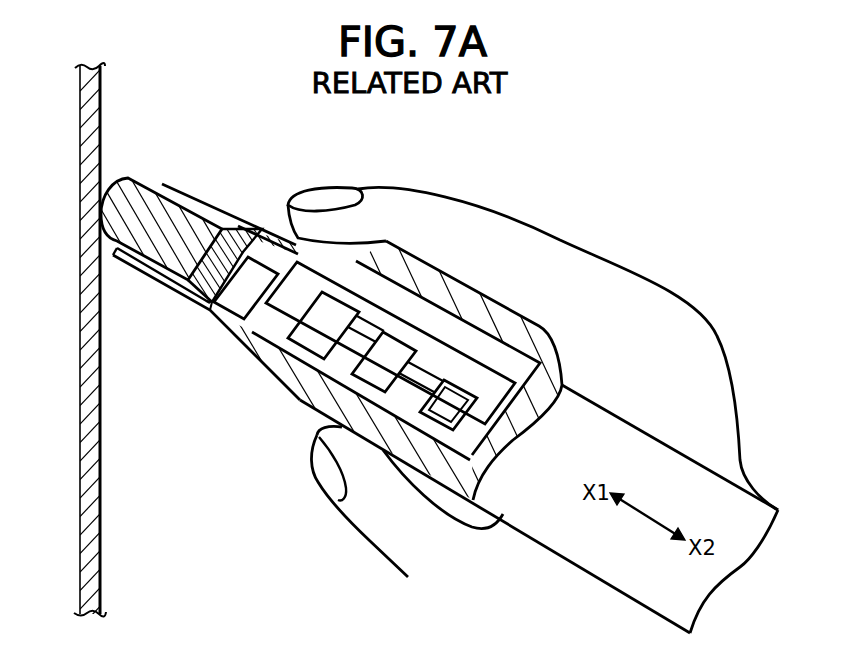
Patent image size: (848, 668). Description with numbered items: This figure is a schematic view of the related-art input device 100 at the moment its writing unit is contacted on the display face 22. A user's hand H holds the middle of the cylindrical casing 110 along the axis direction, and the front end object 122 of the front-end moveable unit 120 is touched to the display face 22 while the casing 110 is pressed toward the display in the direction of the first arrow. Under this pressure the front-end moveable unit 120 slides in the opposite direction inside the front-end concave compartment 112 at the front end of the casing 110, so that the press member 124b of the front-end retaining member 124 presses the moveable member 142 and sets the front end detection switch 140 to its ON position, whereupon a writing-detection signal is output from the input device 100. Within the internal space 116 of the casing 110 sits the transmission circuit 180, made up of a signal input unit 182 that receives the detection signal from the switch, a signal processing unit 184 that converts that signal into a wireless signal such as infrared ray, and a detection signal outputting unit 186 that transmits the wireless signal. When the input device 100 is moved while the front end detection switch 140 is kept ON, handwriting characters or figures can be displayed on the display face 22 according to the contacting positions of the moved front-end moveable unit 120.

The display face 22 is at (101, 86).
The input device 100 is at (294, 424).
The casing 110 is at (596, 389).
The front-end concave compartment 112 is at (212, 207).
The internal space 116 is at (461, 431).
The front-end moveable unit 120 is at (162, 232).
The front end object 122 is at (110, 192).
The front-end retaining member 124 is at (137, 268).
The press member 124b is at (208, 296).
The front end detection switch 140 is at (248, 304).
The moveable member 142 is at (236, 292).
The transmission circuit 180 is at (513, 289).
The signal input unit 182 is at (328, 330).
The signal processing unit 184 is at (395, 367).
The detection signal outputting unit 186 is at (452, 410).
The hand H is at (652, 272).